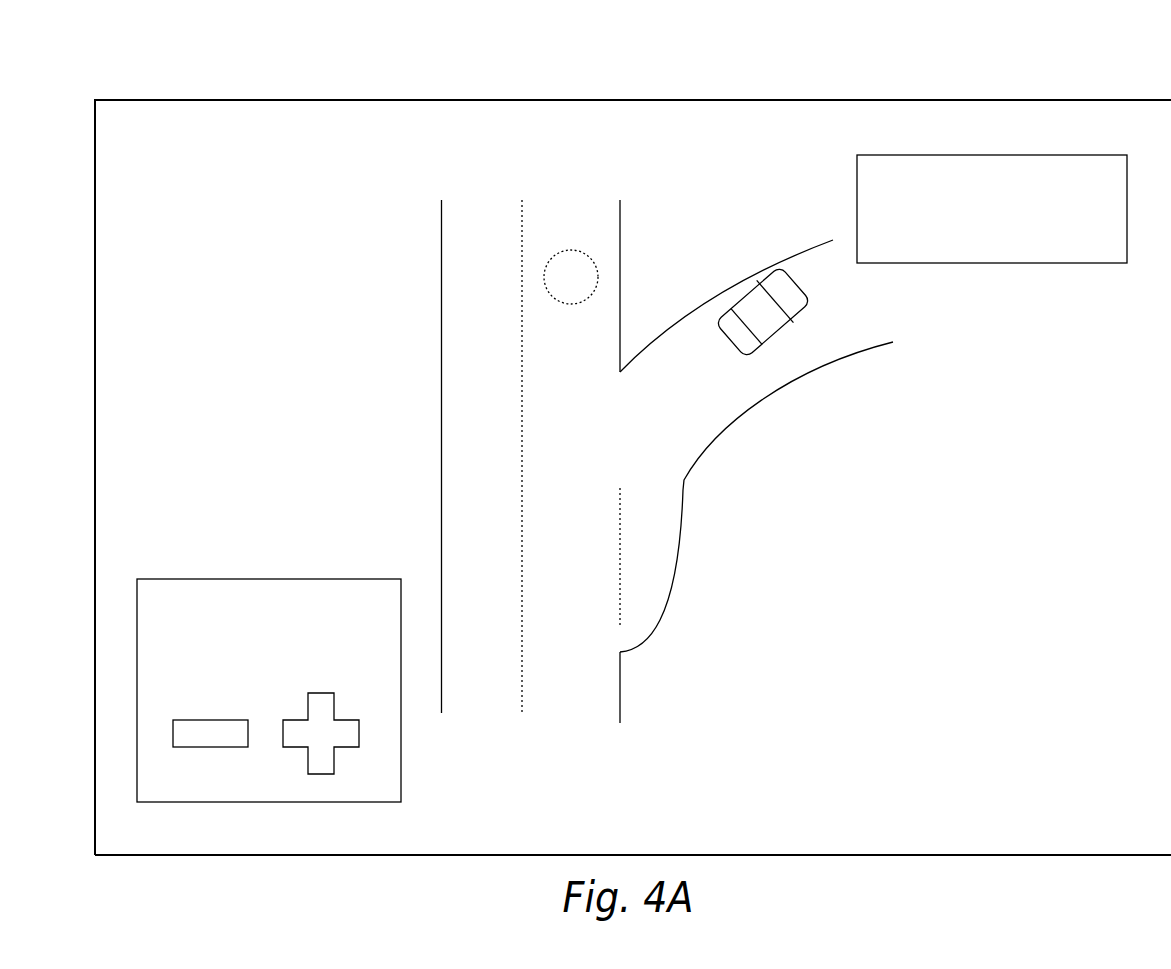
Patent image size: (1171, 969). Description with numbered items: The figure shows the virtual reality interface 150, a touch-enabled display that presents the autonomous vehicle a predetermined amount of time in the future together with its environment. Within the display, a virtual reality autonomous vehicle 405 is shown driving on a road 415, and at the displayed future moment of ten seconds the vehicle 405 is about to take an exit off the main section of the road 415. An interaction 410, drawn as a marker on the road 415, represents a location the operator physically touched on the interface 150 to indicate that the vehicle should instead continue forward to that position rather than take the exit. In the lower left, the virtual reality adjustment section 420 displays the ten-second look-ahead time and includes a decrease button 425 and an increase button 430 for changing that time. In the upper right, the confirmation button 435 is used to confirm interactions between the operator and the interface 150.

The virtual reality interface 150 is at (983, 100).
The virtual reality autonomous vehicle 405 is at (803, 280).
The interaction 410 is at (598, 278).
The road 415 is at (475, 332).
The virtual reality adjustment section 420 is at (279, 578).
The decrease button 425 is at (233, 718).
The increase button 430 is at (342, 748).
The confirmation button 435 is at (982, 263).